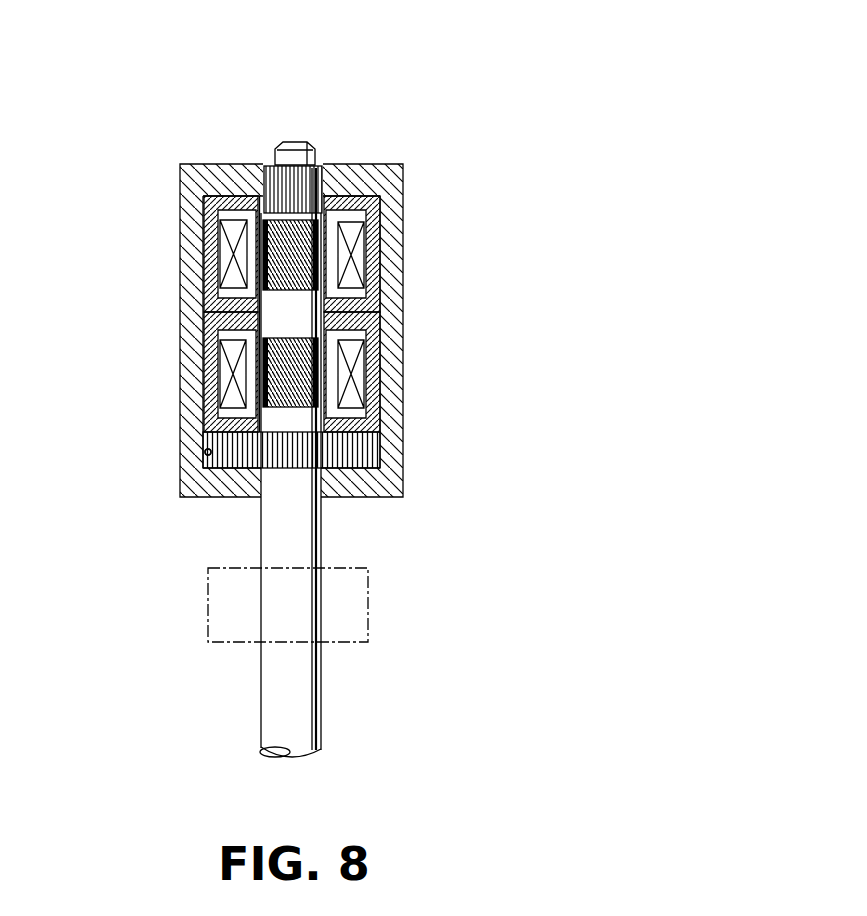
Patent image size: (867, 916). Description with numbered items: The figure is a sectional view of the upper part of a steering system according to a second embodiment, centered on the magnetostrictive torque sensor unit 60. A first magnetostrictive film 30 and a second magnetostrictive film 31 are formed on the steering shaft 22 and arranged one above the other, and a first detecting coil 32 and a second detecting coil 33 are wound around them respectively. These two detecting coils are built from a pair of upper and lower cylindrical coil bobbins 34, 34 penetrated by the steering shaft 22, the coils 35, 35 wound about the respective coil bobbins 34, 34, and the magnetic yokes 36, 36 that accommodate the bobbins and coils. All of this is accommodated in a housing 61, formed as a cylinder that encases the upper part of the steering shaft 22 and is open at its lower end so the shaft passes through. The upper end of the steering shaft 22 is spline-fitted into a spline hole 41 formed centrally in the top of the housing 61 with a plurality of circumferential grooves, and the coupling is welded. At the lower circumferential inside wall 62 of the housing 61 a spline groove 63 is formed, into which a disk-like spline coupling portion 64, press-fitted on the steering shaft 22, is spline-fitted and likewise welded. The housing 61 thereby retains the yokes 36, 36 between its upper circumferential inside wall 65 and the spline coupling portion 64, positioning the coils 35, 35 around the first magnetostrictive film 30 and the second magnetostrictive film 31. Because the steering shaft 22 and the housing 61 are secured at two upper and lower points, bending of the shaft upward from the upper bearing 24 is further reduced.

The magnetostrictive torque sensor unit 60 is at (478, 130).
The housing 61 is at (357, 164).
The lower circumferential inside wall 62 is at (205, 452).
The spline groove 63 is at (147, 465).
The spline coupling portion 64 is at (375, 452).
The upper circumferential inside wall 65 is at (250, 197).
The spline hole 41 is at (305, 172).
The steering shaft 22 is at (298, 522).
The upper bearing 24 is at (368, 618).
The first magnetostrictive film 30 is at (268, 266).
The second magnetostrictive film 31 is at (280, 377).
The first detecting coil 32 is at (390, 220).
The second detecting coil 33 is at (390, 355).
The coil bobbin 34 is at (225, 218).
The coil 35 is at (226, 262).
The magnetic yoke 36 is at (360, 272).